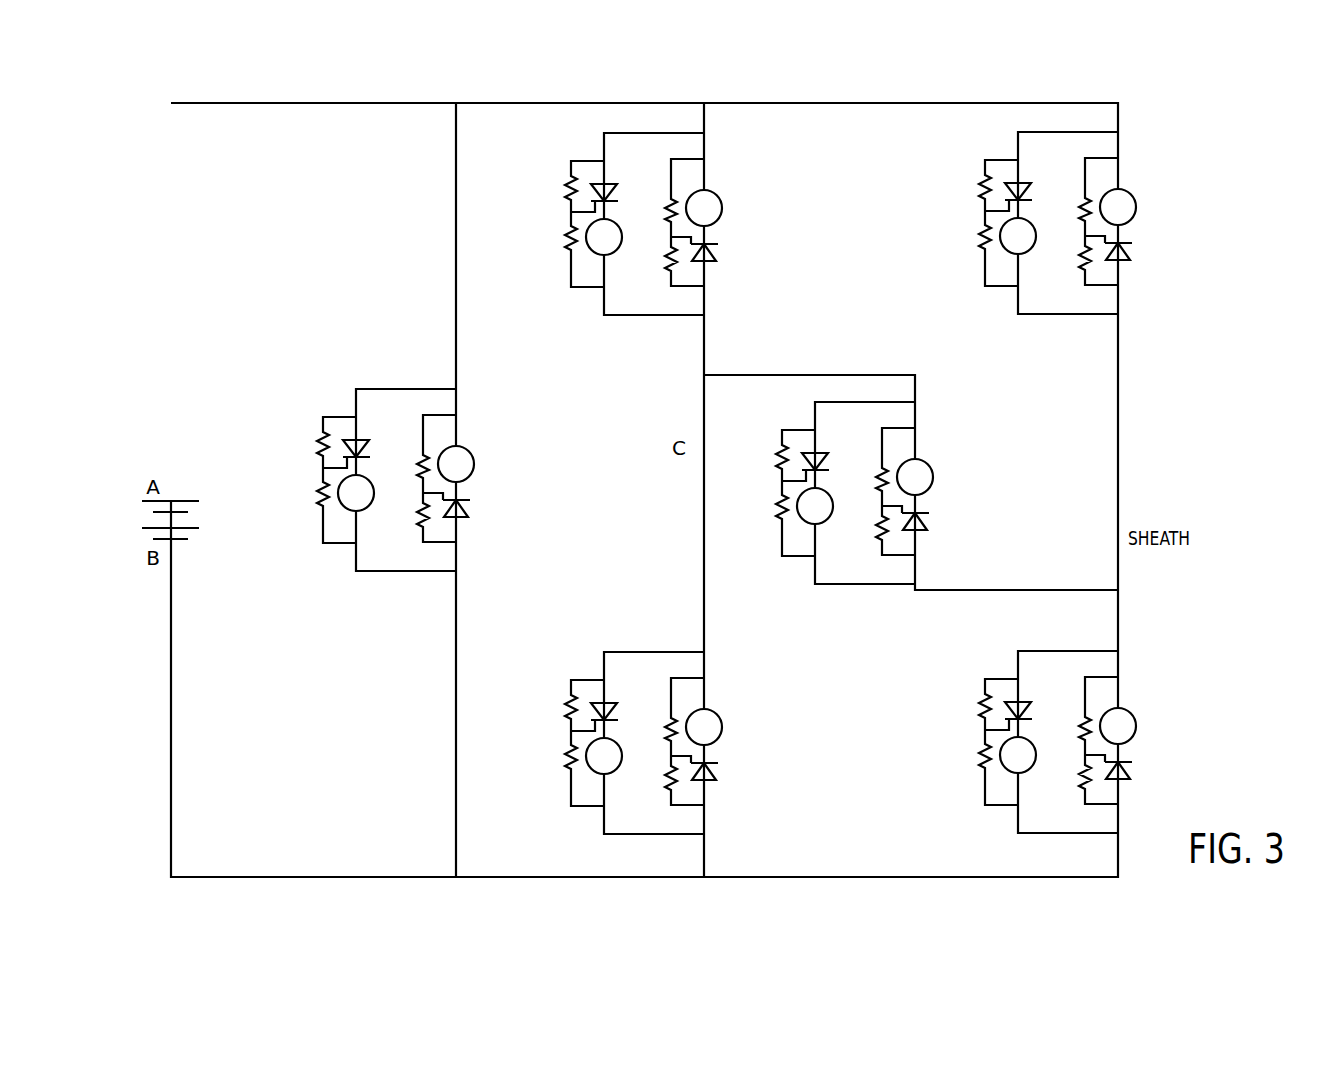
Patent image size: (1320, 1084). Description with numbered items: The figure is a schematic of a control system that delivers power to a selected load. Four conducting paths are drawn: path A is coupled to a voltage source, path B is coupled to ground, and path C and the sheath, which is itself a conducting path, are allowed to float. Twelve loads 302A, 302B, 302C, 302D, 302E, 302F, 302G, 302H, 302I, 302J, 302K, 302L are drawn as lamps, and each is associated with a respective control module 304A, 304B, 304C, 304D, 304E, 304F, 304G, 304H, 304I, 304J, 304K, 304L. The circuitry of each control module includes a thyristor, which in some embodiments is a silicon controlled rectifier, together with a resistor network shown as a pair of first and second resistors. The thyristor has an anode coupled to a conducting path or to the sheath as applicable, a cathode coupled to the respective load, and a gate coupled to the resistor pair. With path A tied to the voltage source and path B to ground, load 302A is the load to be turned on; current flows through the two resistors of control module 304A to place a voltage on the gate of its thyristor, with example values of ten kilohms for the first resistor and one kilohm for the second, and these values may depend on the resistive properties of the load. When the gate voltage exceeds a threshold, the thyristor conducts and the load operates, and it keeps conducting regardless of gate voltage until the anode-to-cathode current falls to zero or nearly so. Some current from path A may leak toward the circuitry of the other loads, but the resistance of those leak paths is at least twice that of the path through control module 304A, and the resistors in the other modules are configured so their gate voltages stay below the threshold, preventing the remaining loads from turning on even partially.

The load 302A is at (368, 517).
The load 302B is at (491, 462).
The load 302C is at (616, 261).
The load 302D is at (739, 206).
The load 302E is at (616, 780).
The load 302F is at (739, 725).
The load 302G is at (827, 530).
The load 302H is at (950, 475).
The load 302I is at (1028, 260).
The load 302J is at (1153, 205).
The load 302K is at (1030, 779).
The load 302L is at (1153, 724).
The control module 304A is at (352, 471).
The control module 304B is at (482, 465).
The control module 304C is at (600, 215).
The control module 304D is at (730, 209).
The control module 304E is at (600, 734).
The control module 304F is at (730, 728).
The control module 304G is at (811, 484).
The control module 304H is at (941, 478).
The control module 304I is at (1016, 214).
The control module 304J is at (1144, 208).
The control module 304K is at (1014, 733).
The control module 304L is at (1145, 727).